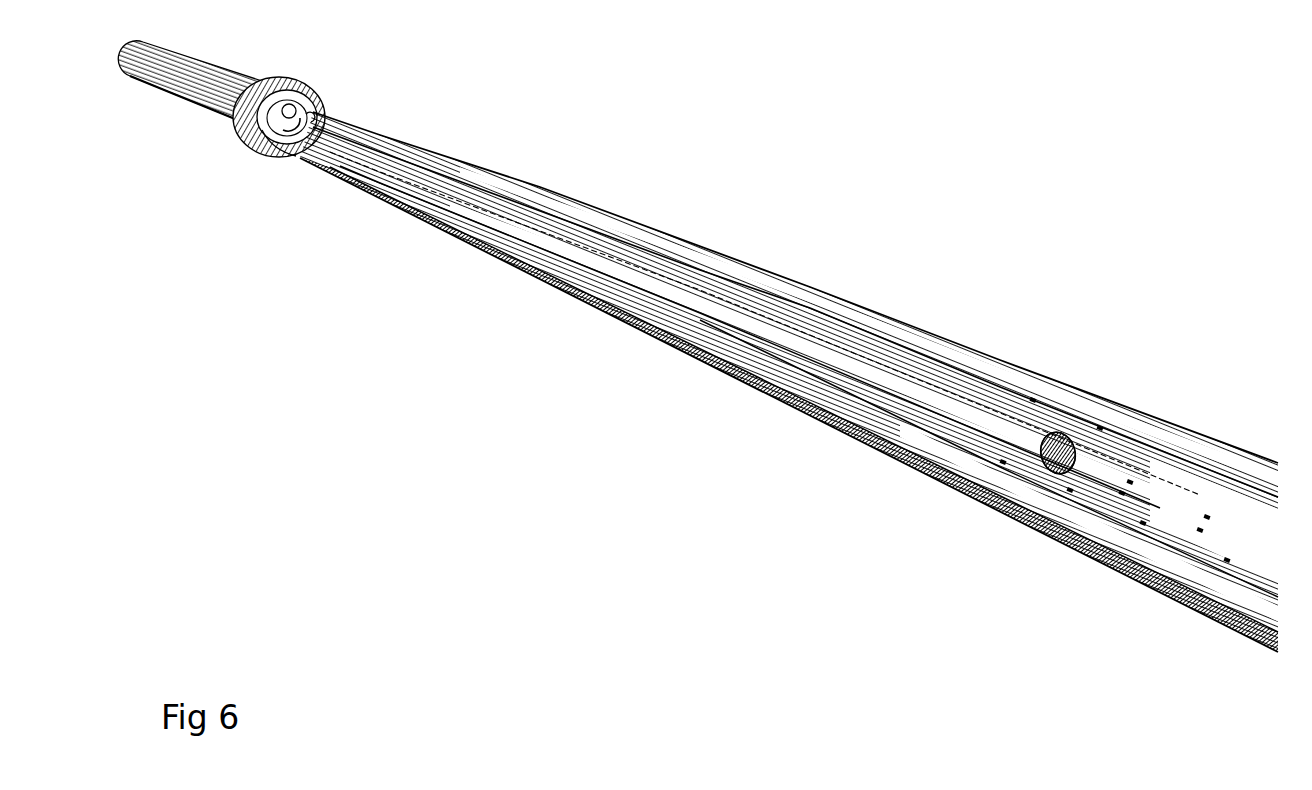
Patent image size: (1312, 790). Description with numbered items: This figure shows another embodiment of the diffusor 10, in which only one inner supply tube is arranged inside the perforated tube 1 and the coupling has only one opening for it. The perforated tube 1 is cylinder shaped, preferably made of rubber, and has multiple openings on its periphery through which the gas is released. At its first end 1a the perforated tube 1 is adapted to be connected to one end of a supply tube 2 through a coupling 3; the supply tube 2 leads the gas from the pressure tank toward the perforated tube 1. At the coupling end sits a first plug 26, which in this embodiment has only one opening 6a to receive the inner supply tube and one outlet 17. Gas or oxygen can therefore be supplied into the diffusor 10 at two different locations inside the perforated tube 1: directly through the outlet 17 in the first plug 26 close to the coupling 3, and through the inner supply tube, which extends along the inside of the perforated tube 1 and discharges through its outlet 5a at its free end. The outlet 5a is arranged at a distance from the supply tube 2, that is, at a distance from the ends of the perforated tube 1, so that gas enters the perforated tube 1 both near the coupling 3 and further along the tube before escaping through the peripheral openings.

The perforated tube 1 is at (582, 200).
The first end 1a is at (262, 130).
The supply tube 2 is at (203, 64).
The coupling 3 is at (288, 77).
The outlet 5a is at (1062, 434).
The opening 6a is at (336, 113).
The diffusor 10 is at (430, 295).
The outlet 17 is at (297, 108).
The first plug 26 is at (280, 120).